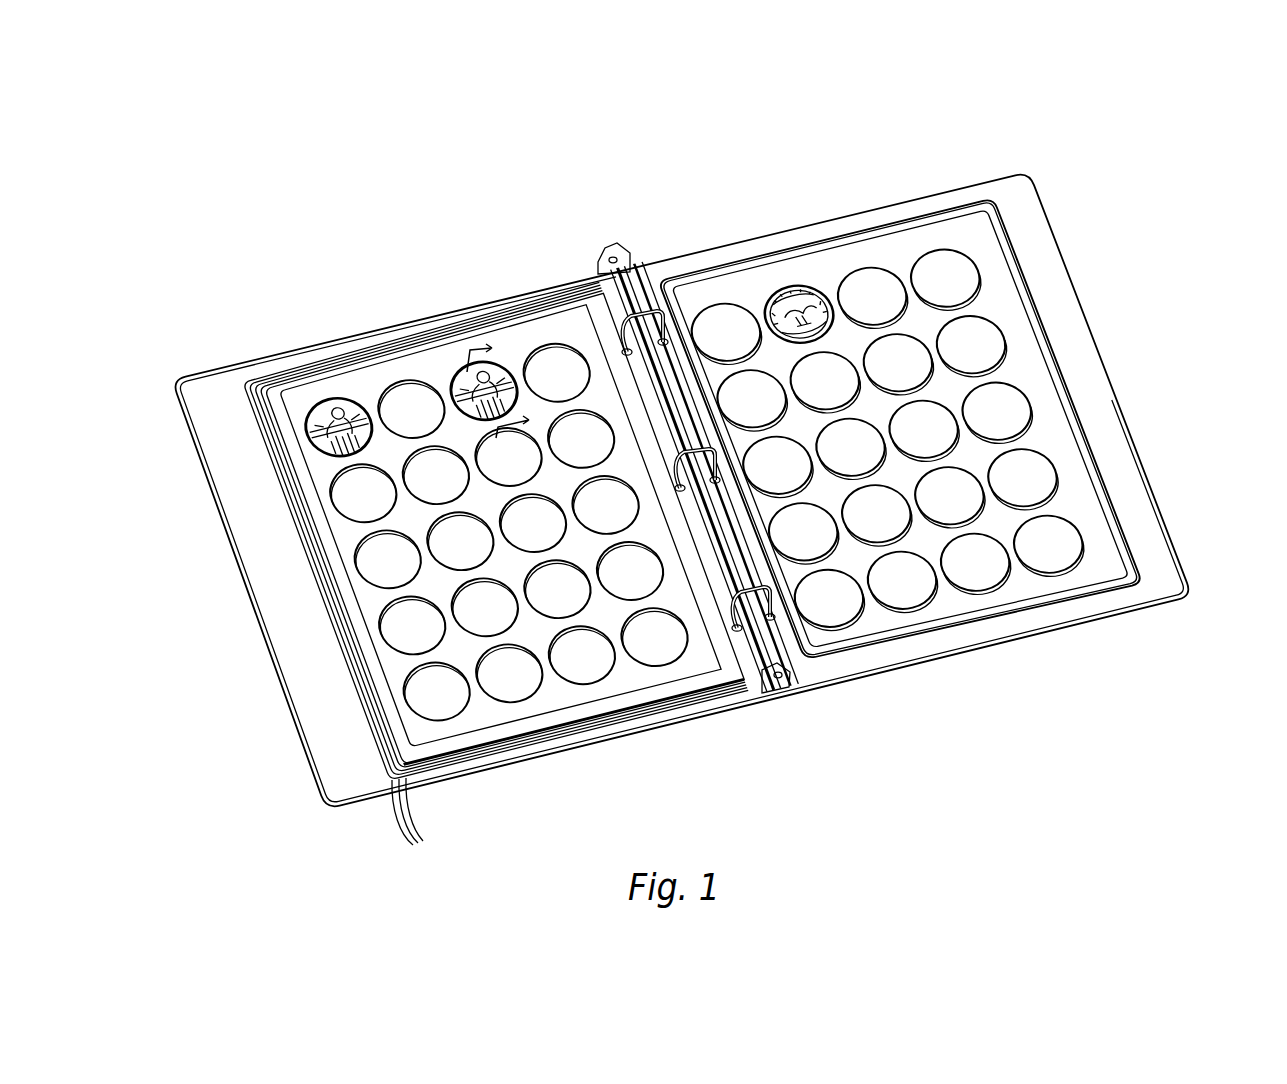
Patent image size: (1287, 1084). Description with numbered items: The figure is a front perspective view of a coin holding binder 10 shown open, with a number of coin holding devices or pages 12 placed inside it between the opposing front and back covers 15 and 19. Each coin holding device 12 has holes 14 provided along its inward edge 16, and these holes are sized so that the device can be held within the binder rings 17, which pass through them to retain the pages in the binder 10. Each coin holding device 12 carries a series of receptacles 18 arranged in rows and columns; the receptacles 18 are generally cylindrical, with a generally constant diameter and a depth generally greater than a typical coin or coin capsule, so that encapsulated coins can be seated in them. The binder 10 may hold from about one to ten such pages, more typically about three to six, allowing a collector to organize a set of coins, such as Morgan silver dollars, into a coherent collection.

The coin holding binder 10 is at (795, 149).
The coin holding device 12 is at (421, 822).
The holes 14 is at (665, 352).
The front cover 15 is at (357, 350).
The inward edge 16 is at (795, 639).
The binder rings 17 is at (674, 468).
The receptacles 18 is at (973, 574).
The back cover 19 is at (1150, 493).